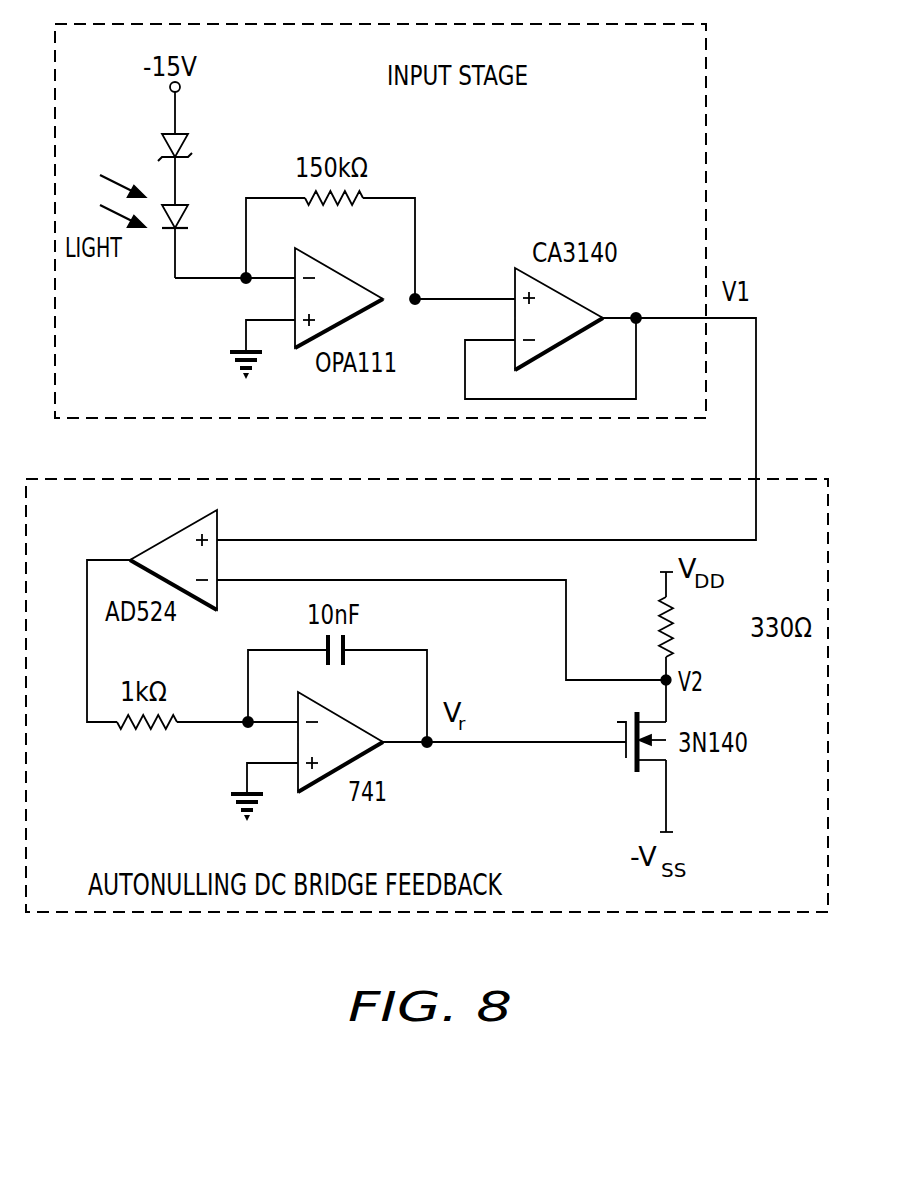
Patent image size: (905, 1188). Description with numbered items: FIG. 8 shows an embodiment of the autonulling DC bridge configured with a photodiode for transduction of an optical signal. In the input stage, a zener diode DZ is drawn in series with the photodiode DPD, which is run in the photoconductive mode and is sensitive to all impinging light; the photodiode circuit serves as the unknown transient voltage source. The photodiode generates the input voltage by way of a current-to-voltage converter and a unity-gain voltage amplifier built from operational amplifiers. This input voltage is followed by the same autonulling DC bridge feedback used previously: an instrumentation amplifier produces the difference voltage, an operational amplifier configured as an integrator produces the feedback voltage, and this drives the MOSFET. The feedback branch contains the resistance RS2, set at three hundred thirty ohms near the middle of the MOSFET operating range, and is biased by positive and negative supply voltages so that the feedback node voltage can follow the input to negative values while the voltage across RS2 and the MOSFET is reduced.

The zener diode DZ is at (166, 152).
The photodiode DPD is at (184, 203).
The resistance of the feedback branch RS2 is at (675, 650).